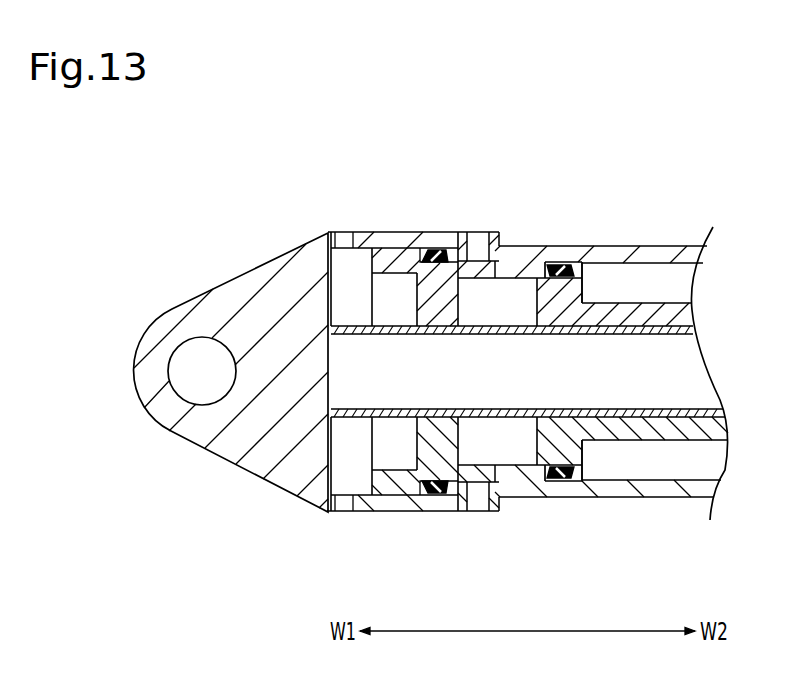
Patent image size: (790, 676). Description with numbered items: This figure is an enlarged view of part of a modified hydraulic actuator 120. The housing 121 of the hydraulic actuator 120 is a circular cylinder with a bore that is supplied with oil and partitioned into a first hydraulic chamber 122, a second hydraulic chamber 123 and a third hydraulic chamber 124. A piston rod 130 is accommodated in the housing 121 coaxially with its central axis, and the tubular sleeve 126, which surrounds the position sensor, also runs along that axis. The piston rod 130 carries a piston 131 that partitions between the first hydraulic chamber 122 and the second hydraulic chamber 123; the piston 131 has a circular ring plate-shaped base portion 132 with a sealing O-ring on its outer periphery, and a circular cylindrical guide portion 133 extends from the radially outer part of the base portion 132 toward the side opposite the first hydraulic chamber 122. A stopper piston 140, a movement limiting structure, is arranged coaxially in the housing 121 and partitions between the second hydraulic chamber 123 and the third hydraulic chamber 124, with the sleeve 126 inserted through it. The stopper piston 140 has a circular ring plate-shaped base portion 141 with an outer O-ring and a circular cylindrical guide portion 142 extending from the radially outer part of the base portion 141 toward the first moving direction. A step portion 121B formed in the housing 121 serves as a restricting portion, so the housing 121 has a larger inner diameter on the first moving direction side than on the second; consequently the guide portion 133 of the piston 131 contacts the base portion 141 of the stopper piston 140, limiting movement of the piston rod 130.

The hydraulic actuator 120 is at (135, 237).
The housing 121 is at (660, 246).
The step portion 121B is at (505, 232).
The first hydraulic chamber 122 is at (665, 472).
The second hydraulic chamber 123 is at (502, 409).
The third hydraulic chamber 124 is at (354, 409).
The sleeve 126 is at (645, 334).
The piston rod 130 is at (668, 297).
The piston 131 is at (534, 432).
The base portion 132 is at (585, 466).
The guide portion 133 is at (517, 473).
The stopper piston 140 is at (413, 417).
The base portion 141 is at (442, 495).
The guide portion 142 is at (397, 495).